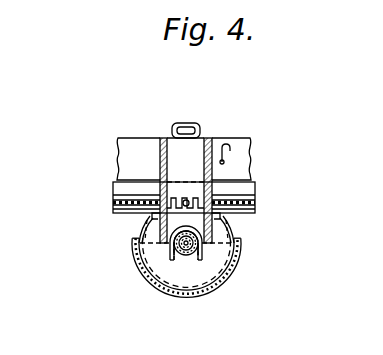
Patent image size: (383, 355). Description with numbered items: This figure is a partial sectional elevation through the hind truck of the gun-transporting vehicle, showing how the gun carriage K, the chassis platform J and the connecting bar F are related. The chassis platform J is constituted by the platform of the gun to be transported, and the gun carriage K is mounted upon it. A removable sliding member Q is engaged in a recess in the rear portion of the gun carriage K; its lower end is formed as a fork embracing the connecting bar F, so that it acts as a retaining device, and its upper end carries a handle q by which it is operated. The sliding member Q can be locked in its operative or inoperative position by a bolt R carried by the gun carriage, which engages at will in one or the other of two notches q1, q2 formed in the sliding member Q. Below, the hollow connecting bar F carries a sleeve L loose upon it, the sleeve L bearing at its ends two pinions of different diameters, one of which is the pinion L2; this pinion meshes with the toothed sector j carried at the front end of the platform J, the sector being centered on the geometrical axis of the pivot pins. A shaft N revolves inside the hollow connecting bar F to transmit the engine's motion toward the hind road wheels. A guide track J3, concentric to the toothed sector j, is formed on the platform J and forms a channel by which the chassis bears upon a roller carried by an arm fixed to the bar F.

The gun carriage K is at (120, 153).
The sliding member Q is at (179, 164).
The handle q is at (177, 123).
The notch q1 is at (204, 140).
The bolt R is at (231, 154).
The chassis platform J is at (190, 190).
The toothed sector j is at (113, 200).
The guide track J3 is at (248, 209).
The notch q2 is at (225, 220).
The shaft N is at (205, 248).
The connecting bar F is at (190, 255).
The sleeve L is at (180, 262).
The pinion L2 is at (148, 258).